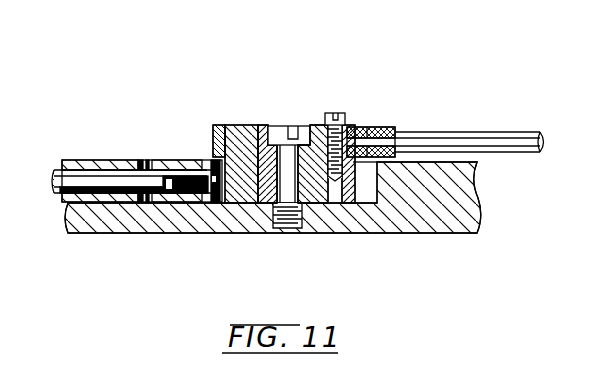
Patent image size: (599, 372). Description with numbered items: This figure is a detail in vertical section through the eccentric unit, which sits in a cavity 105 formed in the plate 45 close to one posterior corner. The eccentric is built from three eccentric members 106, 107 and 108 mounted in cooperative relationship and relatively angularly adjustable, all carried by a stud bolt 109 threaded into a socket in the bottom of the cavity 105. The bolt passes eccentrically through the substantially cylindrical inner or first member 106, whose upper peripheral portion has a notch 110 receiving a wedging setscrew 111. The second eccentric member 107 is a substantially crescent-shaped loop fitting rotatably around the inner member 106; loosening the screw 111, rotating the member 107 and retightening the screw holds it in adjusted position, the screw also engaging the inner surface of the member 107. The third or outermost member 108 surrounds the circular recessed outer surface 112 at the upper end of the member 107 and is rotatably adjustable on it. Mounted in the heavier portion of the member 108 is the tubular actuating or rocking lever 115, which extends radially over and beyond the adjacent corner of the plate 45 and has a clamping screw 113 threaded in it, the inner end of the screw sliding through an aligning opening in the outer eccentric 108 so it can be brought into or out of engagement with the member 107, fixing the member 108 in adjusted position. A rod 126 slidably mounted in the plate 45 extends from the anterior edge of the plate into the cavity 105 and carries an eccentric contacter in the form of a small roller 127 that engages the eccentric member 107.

The plate 45 is at (142, 235).
The cavity 105 is at (368, 197).
The inner eccentric member 106 is at (318, 203).
The second eccentric member 107 is at (243, 127).
The outermost eccentric member 108 is at (221, 126).
The stud bolt 109 is at (279, 127).
The notch 110 is at (318, 126).
The wedging setscrew 111 is at (344, 117).
The circular recessed outer surface 112 is at (214, 158).
The clamping screw 113 is at (383, 133).
The actuating or rocking lever 115 is at (475, 137).
The rod 126 is at (105, 177).
The roller 127 is at (188, 181).